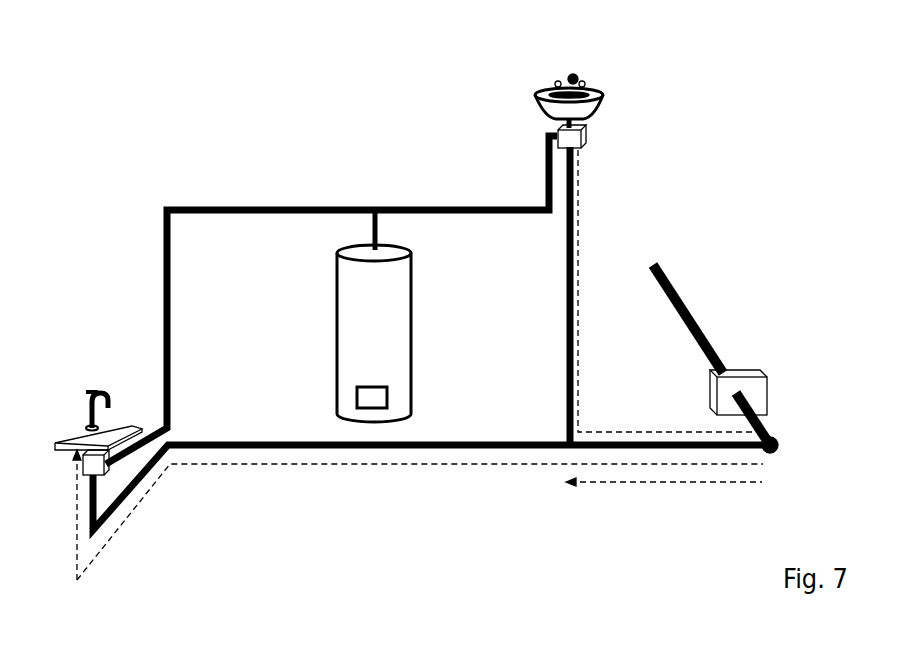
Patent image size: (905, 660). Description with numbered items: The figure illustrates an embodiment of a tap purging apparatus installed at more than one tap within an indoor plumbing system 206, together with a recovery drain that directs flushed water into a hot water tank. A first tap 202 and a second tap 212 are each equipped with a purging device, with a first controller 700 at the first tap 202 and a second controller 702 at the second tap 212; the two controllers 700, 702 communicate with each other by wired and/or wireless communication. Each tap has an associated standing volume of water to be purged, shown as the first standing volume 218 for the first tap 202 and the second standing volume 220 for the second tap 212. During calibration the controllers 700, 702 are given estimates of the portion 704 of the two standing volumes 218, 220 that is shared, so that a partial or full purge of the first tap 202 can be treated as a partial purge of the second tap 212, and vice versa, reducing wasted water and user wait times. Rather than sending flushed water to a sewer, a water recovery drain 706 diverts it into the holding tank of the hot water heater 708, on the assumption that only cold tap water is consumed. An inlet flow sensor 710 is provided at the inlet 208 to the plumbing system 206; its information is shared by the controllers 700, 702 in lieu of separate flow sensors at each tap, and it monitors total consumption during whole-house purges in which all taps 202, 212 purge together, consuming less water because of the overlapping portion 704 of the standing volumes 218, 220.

The first tap 202 is at (97, 390).
The indoor plumbing system 206 is at (463, 439).
The inlet 208 is at (777, 449).
The second tap 212 is at (570, 73).
The first standing volume 218 is at (358, 467).
The second standing volume 220 is at (580, 360).
The first controller 700 is at (82, 473).
The second controller 702 is at (587, 135).
The shared portion of standing volumes 704 is at (638, 482).
The water recovery drain 706 is at (333, 207).
The hot water heater 708 is at (390, 303).
The inlet flow sensor 710 is at (708, 391).